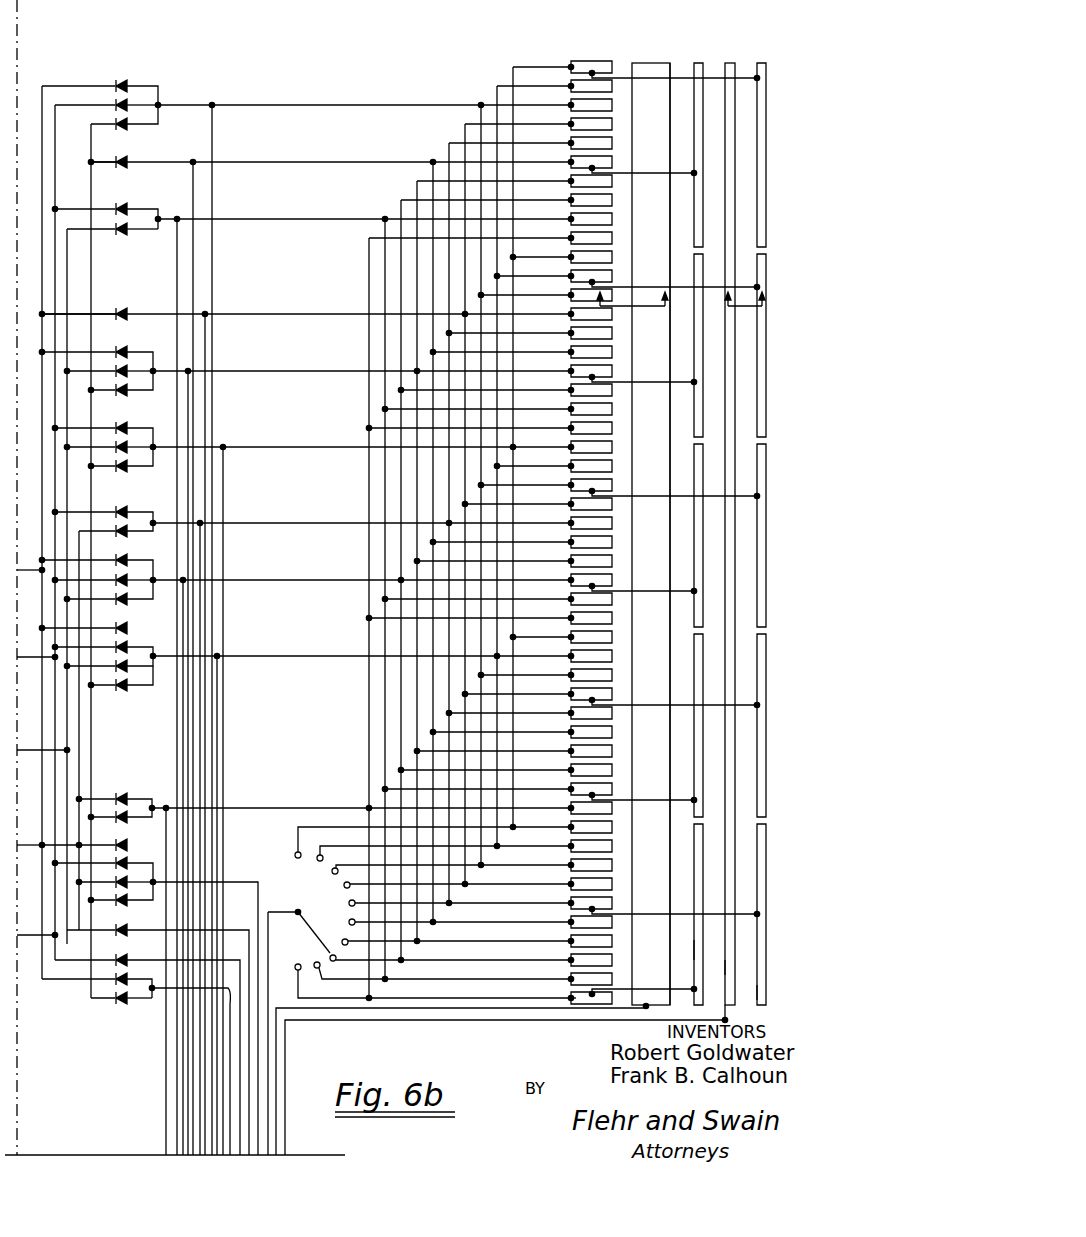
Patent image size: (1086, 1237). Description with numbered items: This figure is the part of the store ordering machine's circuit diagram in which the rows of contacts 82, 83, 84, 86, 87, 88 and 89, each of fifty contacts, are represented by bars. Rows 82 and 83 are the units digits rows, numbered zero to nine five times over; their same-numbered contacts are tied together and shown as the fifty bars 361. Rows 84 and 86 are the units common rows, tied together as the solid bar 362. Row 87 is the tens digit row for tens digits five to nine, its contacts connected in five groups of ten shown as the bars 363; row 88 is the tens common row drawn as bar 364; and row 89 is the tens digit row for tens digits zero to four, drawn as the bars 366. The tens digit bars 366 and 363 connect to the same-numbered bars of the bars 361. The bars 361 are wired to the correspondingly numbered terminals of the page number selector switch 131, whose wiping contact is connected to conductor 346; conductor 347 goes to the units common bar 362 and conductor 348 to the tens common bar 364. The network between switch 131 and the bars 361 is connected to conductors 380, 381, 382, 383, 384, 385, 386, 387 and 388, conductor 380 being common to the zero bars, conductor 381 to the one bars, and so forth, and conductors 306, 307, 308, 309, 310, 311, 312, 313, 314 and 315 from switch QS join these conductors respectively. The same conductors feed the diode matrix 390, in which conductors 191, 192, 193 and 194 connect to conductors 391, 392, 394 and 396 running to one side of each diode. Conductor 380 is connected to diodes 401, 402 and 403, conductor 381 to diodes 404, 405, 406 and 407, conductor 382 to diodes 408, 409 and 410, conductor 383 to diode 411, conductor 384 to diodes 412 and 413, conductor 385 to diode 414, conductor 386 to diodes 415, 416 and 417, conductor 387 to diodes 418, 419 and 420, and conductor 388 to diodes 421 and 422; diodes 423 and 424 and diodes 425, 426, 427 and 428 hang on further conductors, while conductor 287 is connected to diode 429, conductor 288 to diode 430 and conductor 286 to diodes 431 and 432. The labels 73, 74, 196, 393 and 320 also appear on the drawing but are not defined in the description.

The units digits row of contacts 82 is at (574, 60).
The units digits row of contacts 83 is at (598, 60).
The units common row of contacts 84 is at (648, 60).
The units common row of contacts 86 is at (667, 60).
The tens digit row of contacts 87 is at (700, 60).
The tens common row of contacts 88 is at (731, 60).
The tens digit row of contacts 89 is at (763, 60).
The relay group 73 is at (658, 308).
The relay group 74 is at (754, 308).
The diode matrix 390 is at (141, 62).
The conductor 391 is at (42, 428).
The conductor 392 is at (92, 782).
The bus line 393 is at (70, 712).
The conductor 394 is at (81, 741).
The conductor 396 is at (57, 761).
The conductor 191 is at (28, 573).
The conductor 192 is at (28, 660).
The conductor 193 is at (28, 753).
The conductor 194 is at (28, 848).
The input line 196 is at (28, 938).
The diode 401 is at (126, 426).
The diode 402 is at (136, 441).
The diode 403 is at (136, 459).
The diode 404 is at (126, 626).
The diode 405 is at (136, 643).
The diode 406 is at (136, 660).
The diode 407 is at (136, 678).
The diode 408 is at (130, 86).
The diode 409 is at (130, 105).
The diode 410 is at (130, 124).
The diode 411 is at (126, 312).
The diode 412 is at (126, 510).
The diode 413 is at (136, 525).
The diode 414 is at (130, 162).
The diode 415 is at (126, 350).
The diode 416 is at (136, 365).
The diode 417 is at (136, 383).
The diode 418 is at (126, 558).
The diode 419 is at (136, 574).
The diode 420 is at (136, 592).
The diode 421 is at (127, 209).
The diode 422 is at (128, 233).
The diode 423 is at (127, 798).
The diode 424 is at (127, 819).
The diode 425 is at (126, 844).
The diode 426 is at (136, 864).
The diode 427 is at (136, 876).
The diode 428 is at (136, 894).
The diode 429 is at (127, 930).
The diode 430 is at (127, 959).
The diode 431 is at (127, 978).
The diode 432 is at (127, 1004).
The conductor 380 is at (262, 449).
The conductor 381 is at (262, 658).
The conductor 382 is at (262, 104).
The conductor 383 is at (262, 316).
The conductor 384 is at (262, 525).
The conductor 385 is at (262, 164).
The conductor 386 is at (262, 373).
The conductor 387 is at (262, 582).
The conductor 388 is at (262, 221).
The conductor 306 is at (224, 498).
The conductor 307 is at (218, 718).
The conductor 308 is at (213, 140).
The conductor 309 is at (206, 417).
The conductor 310 is at (199, 536).
The conductor 311 is at (192, 177).
The conductor 312 is at (187, 473).
The conductor 313 is at (182, 718).
The conductor 314 is at (177, 283).
The conductor 315 is at (162, 1132).
The output line 320 is at (257, 880).
The conductor 287 is at (249, 929).
The conductor 288 is at (240, 959).
The conductor 286 is at (248, 980).
The conductor 346 is at (268, 958).
The conductor 347 is at (394, 1012).
The conductor 348 is at (464, 1023).
The page number selector switch 131 is at (278, 856).
The units digits bars 361 is at (578, 1006).
The units common bar 362 is at (666, 974).
The tens digit bars 363 is at (697, 950).
The tens common bar 364 is at (727, 970).
The tens digit bars 366 is at (757, 996).